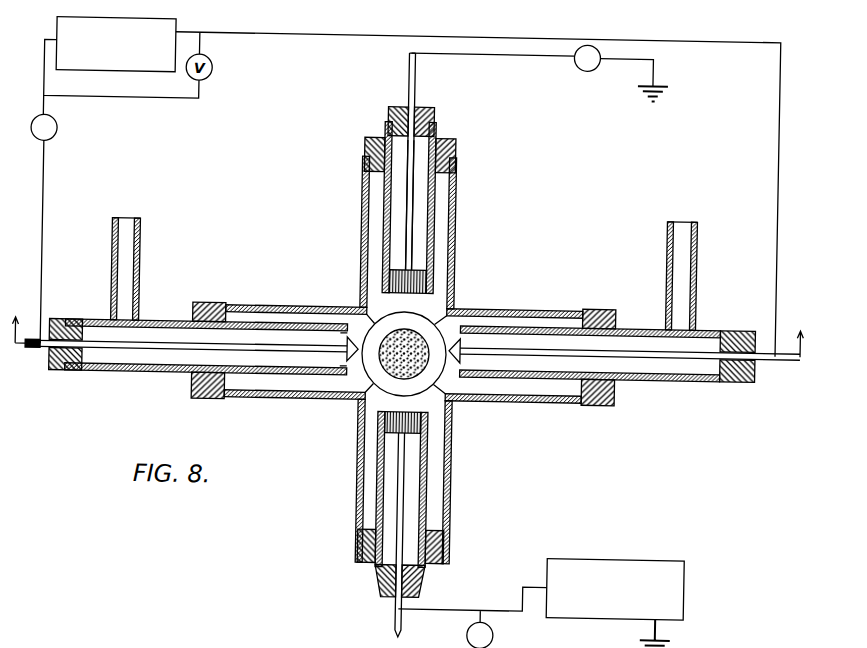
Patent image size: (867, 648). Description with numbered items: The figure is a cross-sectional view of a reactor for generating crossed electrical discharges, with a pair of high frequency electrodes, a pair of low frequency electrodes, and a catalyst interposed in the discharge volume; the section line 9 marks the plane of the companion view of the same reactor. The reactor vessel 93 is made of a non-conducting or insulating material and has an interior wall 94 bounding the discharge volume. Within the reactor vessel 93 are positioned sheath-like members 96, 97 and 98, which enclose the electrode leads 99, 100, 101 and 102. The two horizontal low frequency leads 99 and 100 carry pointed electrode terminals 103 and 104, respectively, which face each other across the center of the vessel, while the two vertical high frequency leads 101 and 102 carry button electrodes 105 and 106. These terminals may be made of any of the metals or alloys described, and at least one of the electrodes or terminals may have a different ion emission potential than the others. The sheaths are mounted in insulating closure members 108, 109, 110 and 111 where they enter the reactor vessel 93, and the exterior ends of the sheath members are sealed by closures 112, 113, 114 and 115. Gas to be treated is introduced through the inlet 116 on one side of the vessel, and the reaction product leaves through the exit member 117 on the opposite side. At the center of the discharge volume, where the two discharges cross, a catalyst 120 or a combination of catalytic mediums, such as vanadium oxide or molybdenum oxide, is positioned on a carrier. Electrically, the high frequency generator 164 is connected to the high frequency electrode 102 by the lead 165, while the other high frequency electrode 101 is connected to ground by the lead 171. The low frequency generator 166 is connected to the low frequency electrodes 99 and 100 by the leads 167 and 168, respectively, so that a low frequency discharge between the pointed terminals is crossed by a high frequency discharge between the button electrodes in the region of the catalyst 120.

The section line 9- 9 is at (408, 326).
The reactor vessel 93 is at (257, 306).
The interior wall 94 is at (321, 322).
The sheath-like member 96 is at (275, 380).
The sheath-like member 97 is at (436, 219).
The sheath-like member 98 is at (425, 482).
The electrode lead 99 is at (167, 357).
The electrode lead 100 is at (678, 363).
The electrode lead 101 is at (401, 196).
The electrode lead 102 is at (402, 490).
The pointed electrode terminal 103 is at (350, 374).
The pointed electrode terminal 104 is at (468, 332).
The button electrode 105 is at (428, 270).
The button electrode 106 is at (429, 425).
The insulating closure member 108 is at (204, 307).
The insulating closure member 109 is at (604, 401).
The insulating closure member 110 is at (451, 144).
The insulating closure member 111 is at (450, 536).
The closure 112 is at (60, 376).
The closure 113 is at (750, 332).
The closure 114 is at (421, 110).
The closure 115 is at (382, 590).
The inlet 116 is at (110, 235).
The exit member 117 is at (695, 240).
The catalyst 120 is at (395, 368).
The high frequency generator 164 is at (627, 554).
The lead 165 is at (465, 610).
The low frequency generator 166 is at (51, 30).
The lead 167 is at (40, 160).
The lead 168 is at (252, 43).
The lead 171 is at (539, 50).